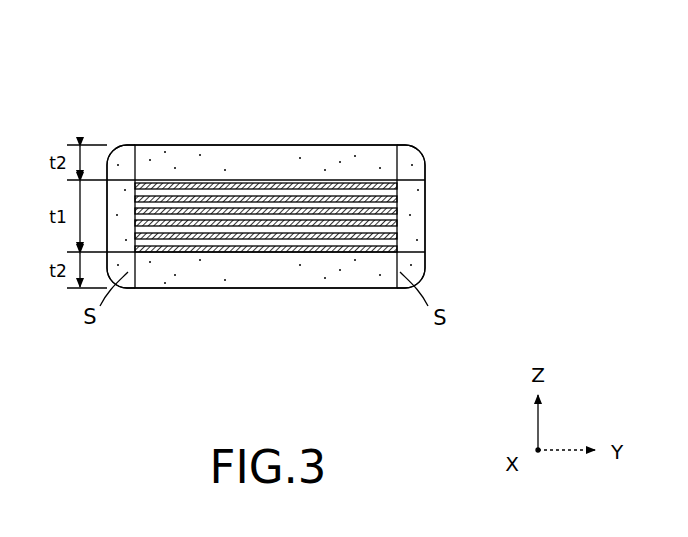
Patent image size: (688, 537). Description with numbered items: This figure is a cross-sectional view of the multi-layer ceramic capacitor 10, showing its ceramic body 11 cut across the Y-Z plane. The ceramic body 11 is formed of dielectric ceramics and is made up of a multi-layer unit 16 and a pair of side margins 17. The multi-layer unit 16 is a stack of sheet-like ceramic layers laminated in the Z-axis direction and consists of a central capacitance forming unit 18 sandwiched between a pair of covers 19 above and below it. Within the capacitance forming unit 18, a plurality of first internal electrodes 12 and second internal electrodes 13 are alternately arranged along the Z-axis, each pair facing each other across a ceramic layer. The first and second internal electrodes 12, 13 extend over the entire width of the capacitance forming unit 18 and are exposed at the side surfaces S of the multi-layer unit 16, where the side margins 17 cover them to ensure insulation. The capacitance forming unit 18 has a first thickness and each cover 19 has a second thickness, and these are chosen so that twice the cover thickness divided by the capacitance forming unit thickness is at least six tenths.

The multi-layer ceramic capacitor 10 is at (148, 57).
The ceramic body 11 is at (378, 87).
The first internal electrodes 12 is at (192, 236).
The second internal electrodes 13 is at (313, 249).
The multi-layer unit 16 is at (270, 137).
The side margins 17 is at (125, 158).
The capacitance forming unit 18 is at (253, 228).
The covers 19 is at (253, 174).